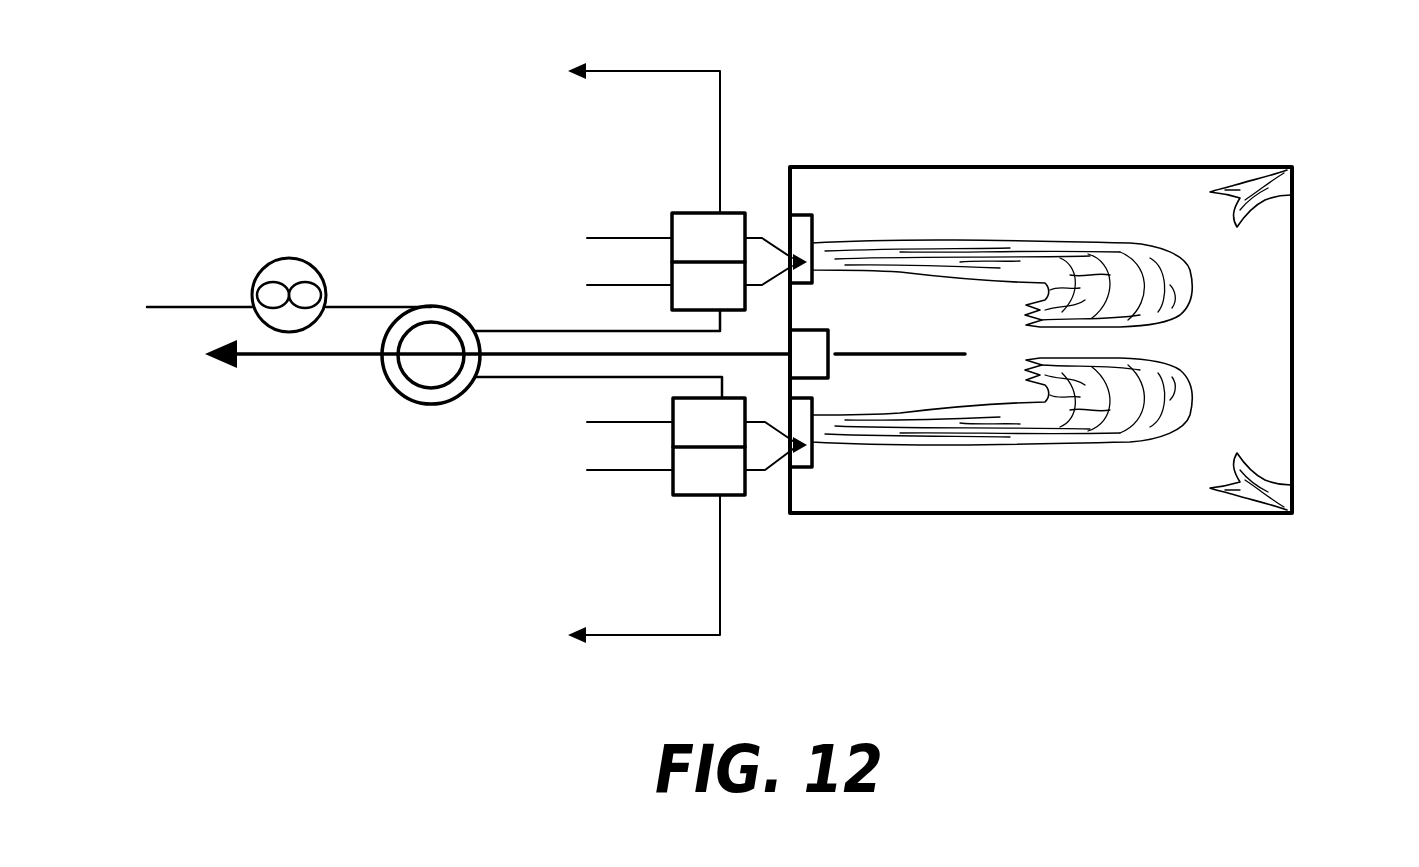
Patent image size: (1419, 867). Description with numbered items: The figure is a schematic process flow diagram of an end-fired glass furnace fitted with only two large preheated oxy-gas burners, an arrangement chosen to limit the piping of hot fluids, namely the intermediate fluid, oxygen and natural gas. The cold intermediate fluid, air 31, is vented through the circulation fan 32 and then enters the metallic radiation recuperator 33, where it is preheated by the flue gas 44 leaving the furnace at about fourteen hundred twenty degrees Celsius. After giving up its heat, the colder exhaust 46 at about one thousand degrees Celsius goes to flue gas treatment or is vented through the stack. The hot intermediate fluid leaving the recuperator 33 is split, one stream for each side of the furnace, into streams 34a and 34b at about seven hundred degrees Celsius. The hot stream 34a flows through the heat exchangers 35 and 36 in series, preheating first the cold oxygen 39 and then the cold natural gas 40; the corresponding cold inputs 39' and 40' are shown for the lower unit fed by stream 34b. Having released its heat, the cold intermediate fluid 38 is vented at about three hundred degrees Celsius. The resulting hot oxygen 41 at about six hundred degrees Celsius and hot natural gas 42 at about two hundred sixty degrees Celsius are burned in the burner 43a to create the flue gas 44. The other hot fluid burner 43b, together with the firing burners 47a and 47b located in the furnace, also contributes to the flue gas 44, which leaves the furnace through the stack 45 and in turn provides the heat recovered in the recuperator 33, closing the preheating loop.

The air 31 is at (206, 307).
The circulation fan 32 is at (288, 258).
The metallic radiation recuperator 33 is at (393, 385).
The hot intermediate fluid stream 34a is at (515, 328).
The hot intermediate fluid stream 34b is at (503, 378).
The heat exchanger 35 is at (680, 295).
The heat exchanger 36 is at (695, 212).
The cold intermediate fluid 38 is at (645, 71).
The cold oxygen 39 is at (602, 264).
The cold natural gas 40 is at (602, 210).
The input line 39' is at (608, 407).
The input line 40' is at (608, 497).
The hot oxygen 41 is at (765, 288).
The hot natural gas 42 is at (757, 237).
The burner 43a is at (803, 213).
The hot fluid burner 43b is at (797, 466).
The flue gas 44 is at (1012, 258).
The stack 45 is at (818, 367).
The colder exhaust 46 is at (350, 357).
The firing burner 47a is at (1253, 198).
The firing burner 47b is at (1255, 480).